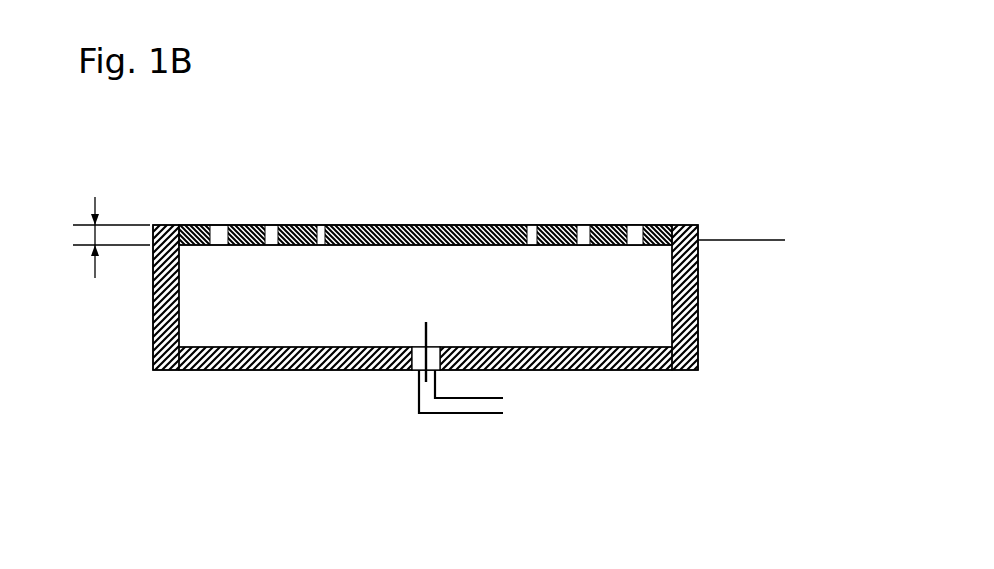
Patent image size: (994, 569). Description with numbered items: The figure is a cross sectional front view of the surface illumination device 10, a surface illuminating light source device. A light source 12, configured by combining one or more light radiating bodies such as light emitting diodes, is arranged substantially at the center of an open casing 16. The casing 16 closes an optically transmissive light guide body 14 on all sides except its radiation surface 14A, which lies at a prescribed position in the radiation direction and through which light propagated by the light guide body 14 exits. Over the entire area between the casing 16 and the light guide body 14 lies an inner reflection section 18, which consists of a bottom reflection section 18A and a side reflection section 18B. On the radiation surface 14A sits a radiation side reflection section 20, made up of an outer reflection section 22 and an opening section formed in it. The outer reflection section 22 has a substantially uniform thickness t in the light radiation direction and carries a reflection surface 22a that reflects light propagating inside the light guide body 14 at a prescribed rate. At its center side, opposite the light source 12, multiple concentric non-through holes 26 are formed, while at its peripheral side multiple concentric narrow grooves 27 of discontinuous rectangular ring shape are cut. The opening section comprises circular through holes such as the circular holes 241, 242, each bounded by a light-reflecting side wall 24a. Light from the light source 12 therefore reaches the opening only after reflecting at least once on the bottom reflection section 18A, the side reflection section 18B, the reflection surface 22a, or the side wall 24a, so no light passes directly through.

The surface illumination device 10 is at (715, 117).
The light source 12 is at (418, 375).
The light guide body 14 is at (333, 304).
The radiation surface 14A is at (742, 240).
The casing 16 is at (700, 313).
The inner reflection section 18 is at (78, 447).
The bottom reflection section 18A is at (220, 347).
The side reflection section 18B is at (184, 318).
The radiation side reflection section 20 is at (274, 211).
The outer reflection section 22 is at (560, 225).
The reflection surface 22a is at (450, 245).
The circular hole 241 is at (533, 225).
The circular hole 242 is at (585, 225).
The side wall 24a is at (643, 225).
The non-through hole 26 is at (382, 225).
The narrow groove 27 is at (340, 225).
The thickness t is at (109, 236).